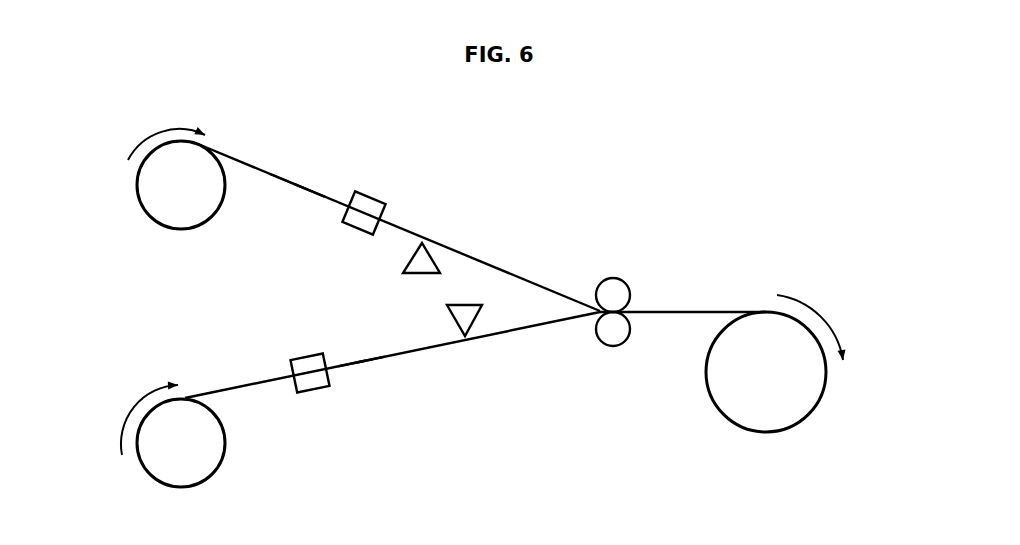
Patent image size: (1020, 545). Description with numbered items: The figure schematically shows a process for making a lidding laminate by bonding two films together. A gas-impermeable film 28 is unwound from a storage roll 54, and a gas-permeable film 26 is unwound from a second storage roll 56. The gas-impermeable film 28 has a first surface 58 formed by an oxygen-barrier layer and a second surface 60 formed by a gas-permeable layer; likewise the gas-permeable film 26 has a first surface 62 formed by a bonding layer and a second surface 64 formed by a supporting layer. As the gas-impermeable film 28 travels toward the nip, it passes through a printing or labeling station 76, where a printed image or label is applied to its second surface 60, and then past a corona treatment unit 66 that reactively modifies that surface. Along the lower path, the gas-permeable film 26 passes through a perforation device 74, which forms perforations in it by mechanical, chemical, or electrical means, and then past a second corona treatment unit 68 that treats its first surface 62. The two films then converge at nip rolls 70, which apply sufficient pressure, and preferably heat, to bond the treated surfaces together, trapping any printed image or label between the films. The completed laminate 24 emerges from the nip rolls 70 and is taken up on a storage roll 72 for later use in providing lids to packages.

The laminate 24 is at (690, 312).
The gas-permeable film 26 is at (497, 350).
The gas-impermeable film 28 is at (466, 245).
The storage roll 54 is at (166, 197).
The storage roll 56 is at (166, 455).
The first surface 58 is at (287, 181).
The second surface 60 is at (310, 192).
The first surface 62 is at (352, 363).
The second surface 64 is at (370, 362).
The corona treatment unit 66 is at (408, 262).
The corona treatment unit 68 is at (448, 313).
The nip rolls 70 is at (620, 278).
The storage roll 72 is at (751, 384).
The perforation device 74 is at (300, 358).
The printing or labeling station 76 is at (373, 195).